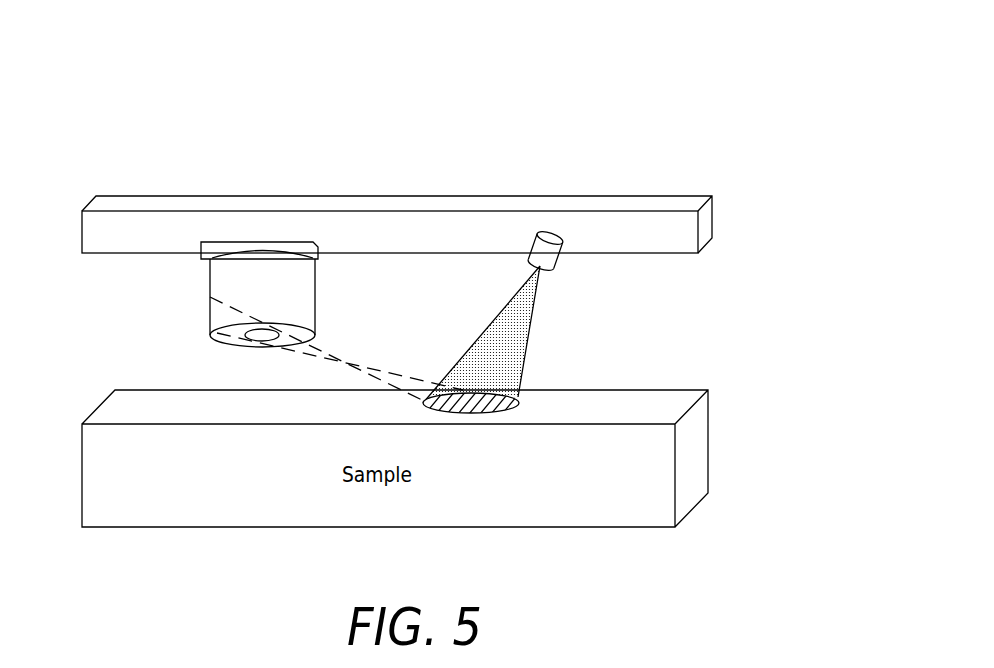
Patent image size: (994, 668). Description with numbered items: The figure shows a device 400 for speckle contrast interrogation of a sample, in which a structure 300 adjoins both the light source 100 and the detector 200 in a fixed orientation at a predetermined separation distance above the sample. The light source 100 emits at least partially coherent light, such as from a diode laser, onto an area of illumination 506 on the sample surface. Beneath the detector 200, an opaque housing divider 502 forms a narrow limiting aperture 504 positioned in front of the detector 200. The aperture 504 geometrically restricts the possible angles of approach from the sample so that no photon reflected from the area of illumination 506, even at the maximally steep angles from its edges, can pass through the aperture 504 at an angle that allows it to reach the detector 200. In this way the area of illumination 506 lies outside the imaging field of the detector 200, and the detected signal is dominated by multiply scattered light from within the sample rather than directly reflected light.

The device 400 is at (665, 120).
The structure 300 is at (434, 203).
The detector 200 is at (255, 250).
The opaque housing divider 502 is at (222, 274).
The aperture 504 is at (260, 337).
The light source 100 is at (552, 263).
The area of illumination 506 is at (528, 385).